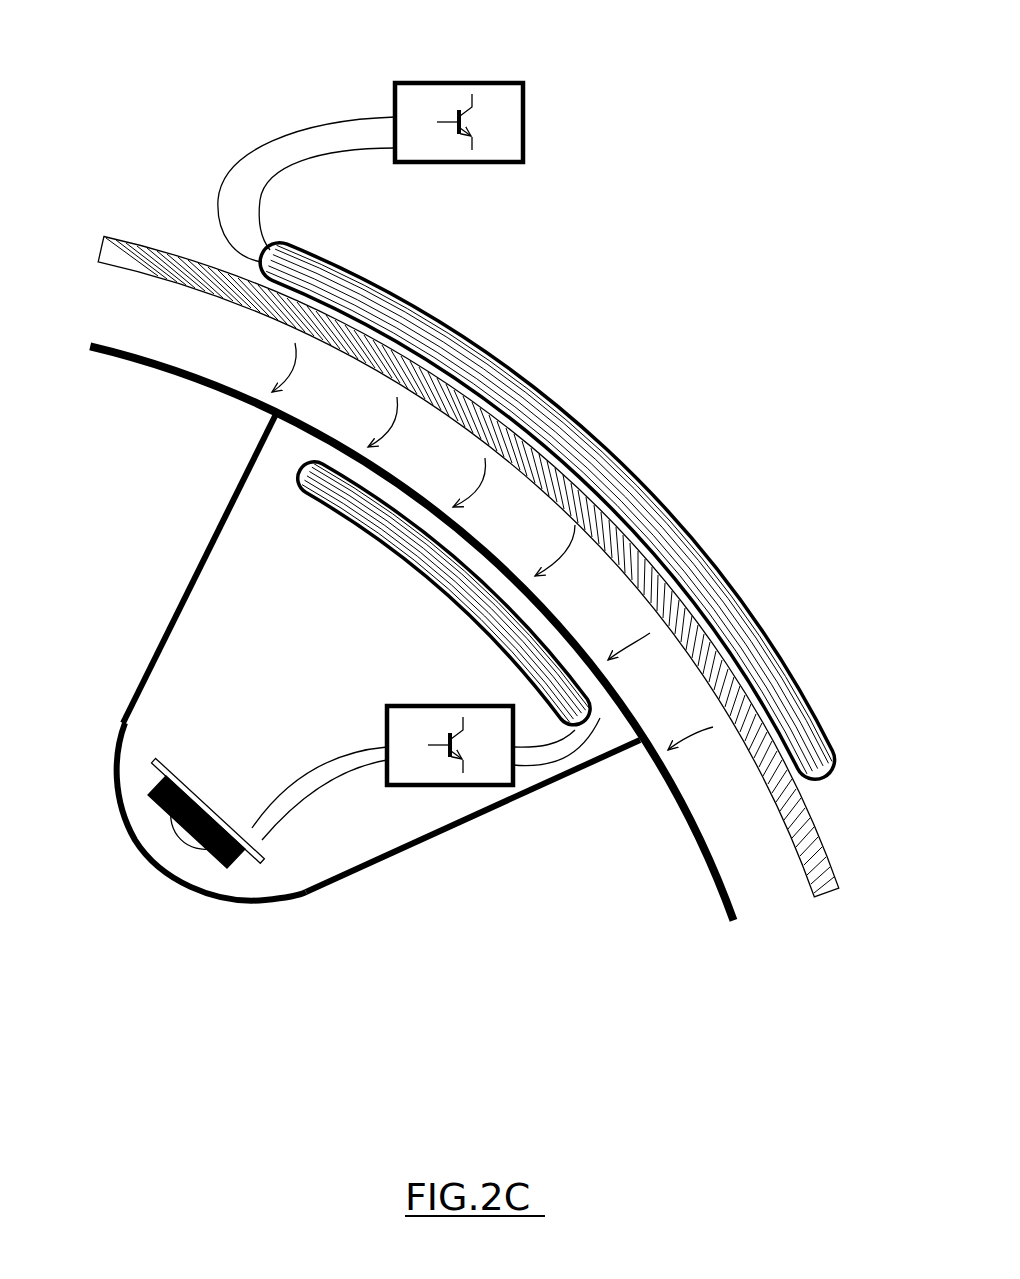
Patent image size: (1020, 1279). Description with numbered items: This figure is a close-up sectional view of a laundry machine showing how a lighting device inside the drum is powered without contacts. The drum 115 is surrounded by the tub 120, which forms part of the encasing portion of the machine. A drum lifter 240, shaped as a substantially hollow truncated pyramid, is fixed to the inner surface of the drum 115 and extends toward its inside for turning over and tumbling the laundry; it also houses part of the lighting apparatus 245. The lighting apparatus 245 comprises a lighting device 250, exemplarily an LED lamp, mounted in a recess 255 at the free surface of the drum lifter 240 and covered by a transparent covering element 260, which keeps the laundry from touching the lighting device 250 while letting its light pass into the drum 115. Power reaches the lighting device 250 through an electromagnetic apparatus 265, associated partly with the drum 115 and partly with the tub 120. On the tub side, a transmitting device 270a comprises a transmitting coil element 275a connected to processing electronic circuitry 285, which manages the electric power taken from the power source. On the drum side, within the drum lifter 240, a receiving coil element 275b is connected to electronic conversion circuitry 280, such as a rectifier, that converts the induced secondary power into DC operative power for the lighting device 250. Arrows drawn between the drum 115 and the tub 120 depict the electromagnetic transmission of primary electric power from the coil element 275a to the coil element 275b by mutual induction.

The drum 115 is at (735, 905).
The tub 120 is at (468, 638).
The drum lifter 240 is at (228, 508).
The lighting apparatus 245 is at (547, 398).
The lighting device 250 is at (217, 850).
The recess 255 is at (128, 764).
The covering element 260 is at (243, 898).
The electromagnetic apparatus 265 is at (620, 763).
The transmitting device 270a is at (387, 285).
The transmitting coil element 275a is at (590, 410).
The receiving coil element 275b is at (313, 497).
The electronic conversion circuitry 280 is at (400, 788).
The processing electronic circuitry 285 is at (447, 83).